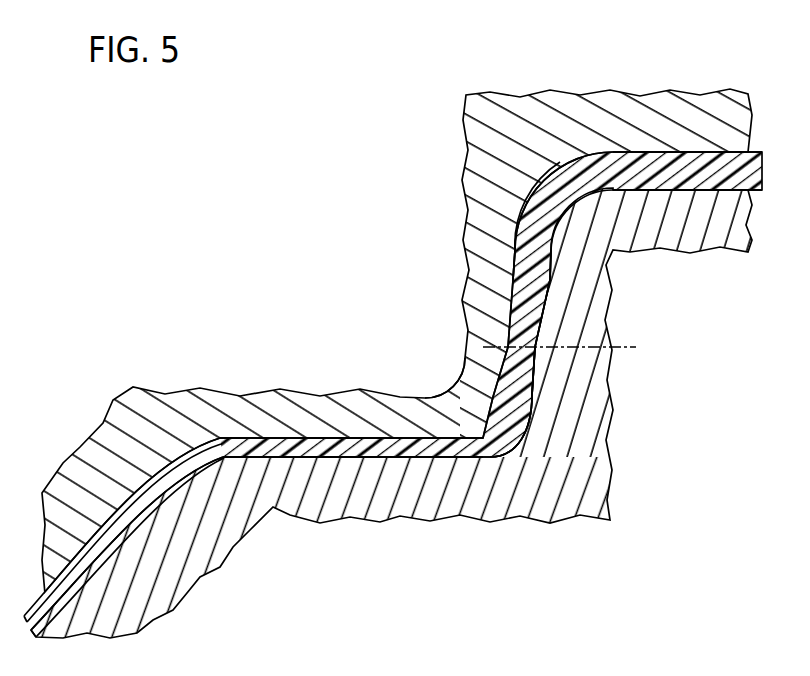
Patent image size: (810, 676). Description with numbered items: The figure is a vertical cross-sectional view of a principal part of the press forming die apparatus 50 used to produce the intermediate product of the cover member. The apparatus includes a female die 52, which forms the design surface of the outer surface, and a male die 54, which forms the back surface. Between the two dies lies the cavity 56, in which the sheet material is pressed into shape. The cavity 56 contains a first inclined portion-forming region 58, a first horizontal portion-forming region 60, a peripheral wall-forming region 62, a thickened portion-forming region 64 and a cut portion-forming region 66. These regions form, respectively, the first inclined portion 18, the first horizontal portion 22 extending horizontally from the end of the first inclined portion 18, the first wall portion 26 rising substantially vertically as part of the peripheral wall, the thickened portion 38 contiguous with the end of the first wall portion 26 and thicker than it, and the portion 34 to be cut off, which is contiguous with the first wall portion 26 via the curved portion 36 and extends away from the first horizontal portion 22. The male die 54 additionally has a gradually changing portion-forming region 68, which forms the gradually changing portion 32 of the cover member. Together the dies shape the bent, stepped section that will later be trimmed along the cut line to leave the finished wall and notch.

The press forming die apparatus 50 is at (186, 129).
The first inclined portion 18 is at (121, 525).
The first horizontal portion 22 is at (357, 440).
The first wall portion 26 is at (533, 398).
The gradually changing portion 32 is at (497, 397).
The portion to be cut off 34 is at (689, 157).
The curved portion 36 is at (567, 170).
The thickened portion 38 is at (540, 285).
The female die 52 is at (427, 512).
The male die 54 is at (212, 400).
The cavity 56 is at (220, 443).
The first inclined portion-forming region 58 is at (102, 553).
The first horizontal portion-forming region 60 is at (320, 455).
The peripheral wall-forming region 62 is at (533, 375).
The thickened portion-forming region 64 is at (517, 253).
The cut portion-forming region 66 is at (658, 190).
The gradually changing portion-forming region 68 is at (490, 388).